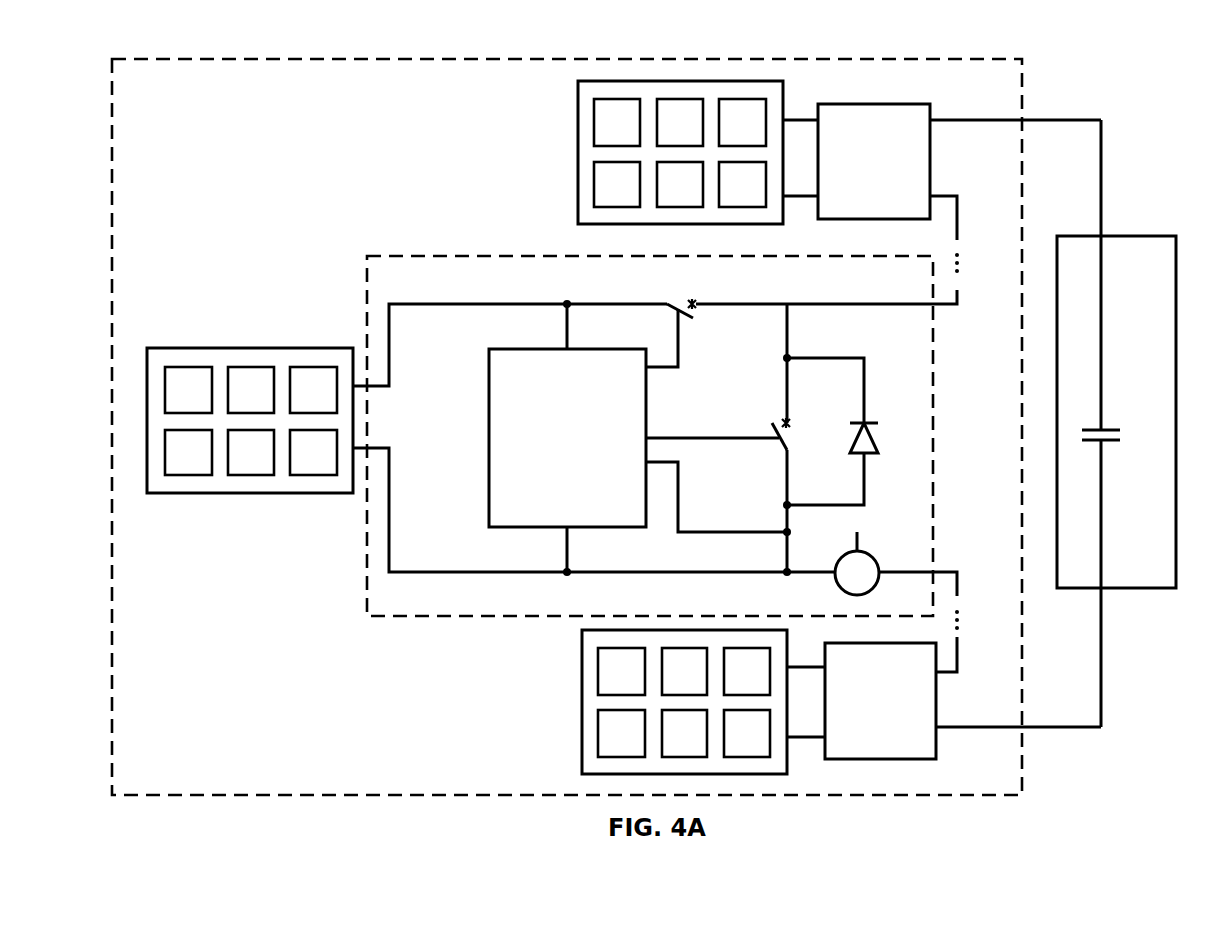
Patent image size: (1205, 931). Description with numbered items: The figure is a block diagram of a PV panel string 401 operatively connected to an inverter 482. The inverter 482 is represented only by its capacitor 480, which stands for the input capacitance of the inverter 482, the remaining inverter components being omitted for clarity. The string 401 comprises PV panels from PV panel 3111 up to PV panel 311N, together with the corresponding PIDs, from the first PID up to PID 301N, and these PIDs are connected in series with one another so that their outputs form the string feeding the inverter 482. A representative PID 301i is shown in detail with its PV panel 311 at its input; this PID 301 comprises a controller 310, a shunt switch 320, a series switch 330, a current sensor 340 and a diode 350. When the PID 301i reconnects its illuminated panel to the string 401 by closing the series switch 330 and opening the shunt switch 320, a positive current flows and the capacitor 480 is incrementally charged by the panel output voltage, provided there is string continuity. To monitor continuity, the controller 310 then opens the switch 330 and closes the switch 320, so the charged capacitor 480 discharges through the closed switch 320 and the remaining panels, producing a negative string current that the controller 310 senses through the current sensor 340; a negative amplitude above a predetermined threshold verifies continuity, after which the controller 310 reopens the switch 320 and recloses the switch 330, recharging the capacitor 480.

The PV panel string 401 is at (282, 56).
The PID 301 is at (464, 254).
The PID N 301N is at (942, 172).
The PID i 301i is at (944, 698).
The PV panel 311 is at (229, 346).
The PV panel N 311N is at (576, 148).
The PV panel 1 3111 is at (580, 683).
The controller 310 is at (567, 438).
The shunt switch 320 is at (798, 434).
The series switch 330 is at (679, 300).
The current sensor 340 is at (853, 594).
The diode 350 is at (882, 438).
The capacitor 480 is at (1118, 439).
The inverter 482 is at (1116, 423).